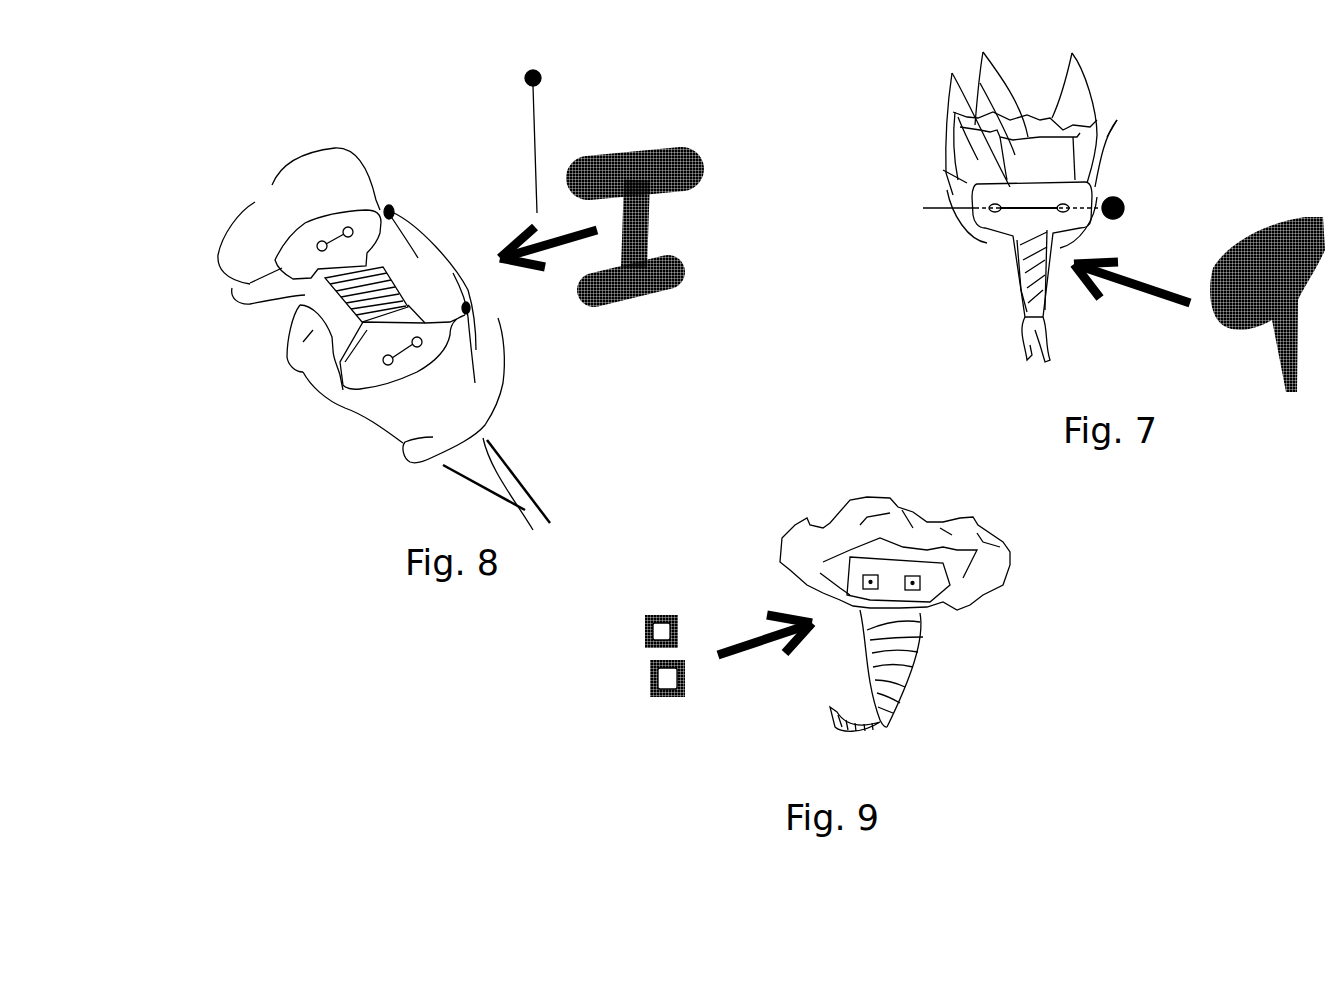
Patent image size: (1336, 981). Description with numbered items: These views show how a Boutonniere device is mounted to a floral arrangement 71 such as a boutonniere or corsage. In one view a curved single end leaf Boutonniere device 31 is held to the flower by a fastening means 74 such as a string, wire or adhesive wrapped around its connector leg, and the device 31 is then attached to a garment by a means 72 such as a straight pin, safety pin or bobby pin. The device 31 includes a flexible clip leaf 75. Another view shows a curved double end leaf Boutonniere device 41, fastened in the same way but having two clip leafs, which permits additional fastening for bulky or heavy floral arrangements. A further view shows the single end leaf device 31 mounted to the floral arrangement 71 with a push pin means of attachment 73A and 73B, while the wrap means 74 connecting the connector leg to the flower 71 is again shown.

In FIG. 7, the curved single end leaf Boutonniere device 31 is at (1037, 230).
In FIG. 9, the curved single end leaf Boutonniere device 31 is at (890, 568).
In FIG. 8, the curved double end leaf Boutonniere device 41 is at (377, 328).
In FIG. 8, the floral arrangement 71 is at (385, 417).
In FIG. 7, the floral arrangement 71 is at (977, 152).
In FIG. 9, the floral arrangement 71 is at (973, 567).
In FIG. 8, the means to connect the device to a garment 72 is at (333, 237).
In FIG. 7, the means to connect the device to a garment 72 is at (1050, 203).
In FIG. 9, the push pin means of attachment 73A is at (645, 683).
In FIG. 9, the push pin means of attachment 73B is at (918, 590).
In FIG. 8, the fastening means 74 is at (387, 280).
In FIG. 7, the fastening means 74 is at (1033, 267).
In FIG. 7, the flexible clip leaf 75 is at (1007, 280).
In FIG. 9, the flexible clip leaf 75 is at (918, 676).